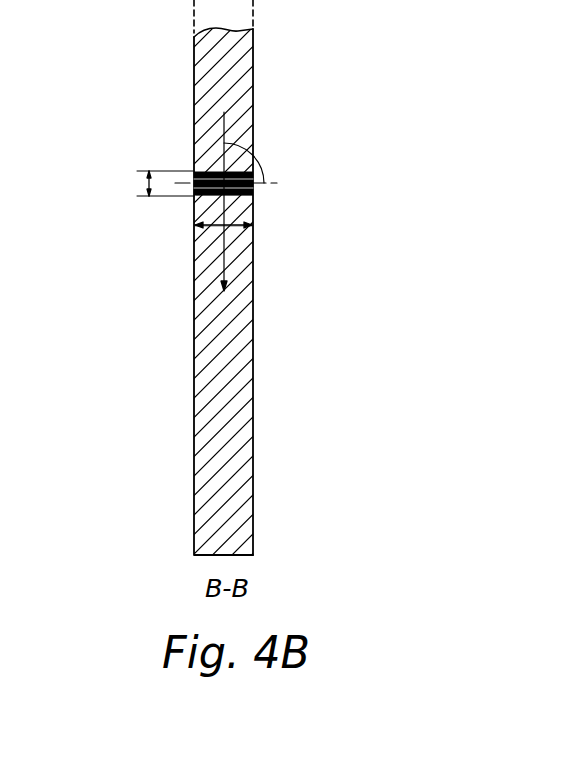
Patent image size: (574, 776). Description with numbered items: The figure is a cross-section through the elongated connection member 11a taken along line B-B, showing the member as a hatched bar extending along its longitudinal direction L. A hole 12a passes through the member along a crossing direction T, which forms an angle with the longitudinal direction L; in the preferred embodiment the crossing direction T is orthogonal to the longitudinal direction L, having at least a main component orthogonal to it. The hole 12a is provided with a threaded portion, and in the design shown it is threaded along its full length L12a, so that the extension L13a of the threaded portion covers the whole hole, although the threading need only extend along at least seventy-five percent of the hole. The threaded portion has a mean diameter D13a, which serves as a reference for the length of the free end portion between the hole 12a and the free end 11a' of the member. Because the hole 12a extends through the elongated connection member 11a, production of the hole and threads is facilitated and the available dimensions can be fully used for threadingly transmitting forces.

The elongated connection member 11a is at (261, 306).
The free end 11a' is at (166, 601).
The hole 12a is at (198, 169).
The mean diameter of the threaded portion D13a is at (144, 183).
The length of the hole L12a is at (216, 229).
The extension of the threaded portion L13a is at (141, 300).
The longitudinal direction L is at (228, 128).
The crossing direction T is at (272, 186).